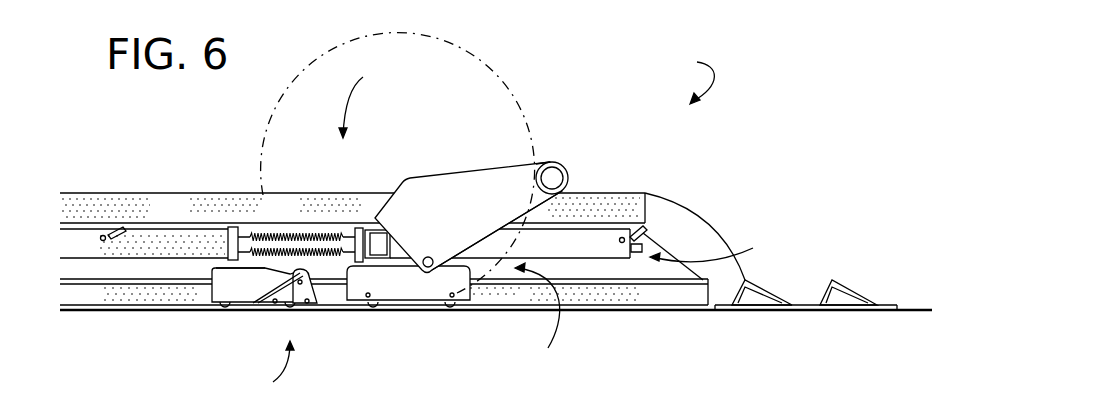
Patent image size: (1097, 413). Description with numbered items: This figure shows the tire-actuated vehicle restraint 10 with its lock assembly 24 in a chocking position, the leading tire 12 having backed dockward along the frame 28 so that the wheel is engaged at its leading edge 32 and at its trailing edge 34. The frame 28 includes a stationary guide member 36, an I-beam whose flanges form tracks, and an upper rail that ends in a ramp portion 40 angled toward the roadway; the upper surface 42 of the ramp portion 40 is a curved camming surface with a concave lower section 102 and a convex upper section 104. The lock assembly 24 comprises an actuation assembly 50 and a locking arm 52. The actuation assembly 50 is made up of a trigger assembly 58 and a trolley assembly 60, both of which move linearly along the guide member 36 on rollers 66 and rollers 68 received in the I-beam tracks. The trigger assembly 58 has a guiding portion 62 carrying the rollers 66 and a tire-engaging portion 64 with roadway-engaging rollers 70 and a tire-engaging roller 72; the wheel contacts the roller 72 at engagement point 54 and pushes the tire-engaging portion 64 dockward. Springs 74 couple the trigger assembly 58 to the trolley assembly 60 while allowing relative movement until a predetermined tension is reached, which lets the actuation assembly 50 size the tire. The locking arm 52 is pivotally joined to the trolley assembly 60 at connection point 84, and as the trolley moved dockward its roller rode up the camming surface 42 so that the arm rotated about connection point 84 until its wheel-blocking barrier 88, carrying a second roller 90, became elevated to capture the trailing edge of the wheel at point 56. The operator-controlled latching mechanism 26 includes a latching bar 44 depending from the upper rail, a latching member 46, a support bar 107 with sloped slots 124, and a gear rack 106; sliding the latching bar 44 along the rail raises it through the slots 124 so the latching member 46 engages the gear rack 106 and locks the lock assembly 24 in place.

The tire-actuated vehicle restraint 10 is at (689, 74).
The leading tire 12 is at (470, 56).
The lock assembly 24 is at (369, 95).
The latching mechanism 26 is at (720, 245).
The frame 28 is at (183, 193).
The leading edge engagement 32 is at (228, 262).
The trailing edge engagement 34 is at (562, 164).
The guide member 36 is at (632, 298).
The ramp portion 40 is at (705, 223).
The upper surface 42 is at (668, 197).
The latching bar 44 is at (565, 248).
The latching member 46 is at (383, 247).
The actuation assembly 50 is at (538, 320).
The locking arm 52 is at (468, 175).
The engagement point 54 is at (313, 271).
The trailing edge point 56 is at (530, 180).
The trigger assembly 58 is at (273, 377).
The trolley assembly 60 is at (428, 292).
The guiding portion 62 is at (212, 288).
The tire-engaging portion 64 is at (290, 306).
The rollers 66 is at (223, 300).
The rollers 68 is at (462, 300).
The roadway-engaging rollers 70 is at (307, 310).
The tire-engaging roller 72 is at (262, 286).
The springs 74 is at (308, 240).
The connection point 84 is at (428, 257).
The wheel-blocking barrier 88 is at (552, 178).
The second roller 90 is at (568, 178).
The lower section 102 is at (753, 270).
The upper section 104 is at (687, 213).
The gear rack 106 is at (633, 247).
The support bar 107 is at (213, 224).
The sloped slots 124 is at (126, 229).